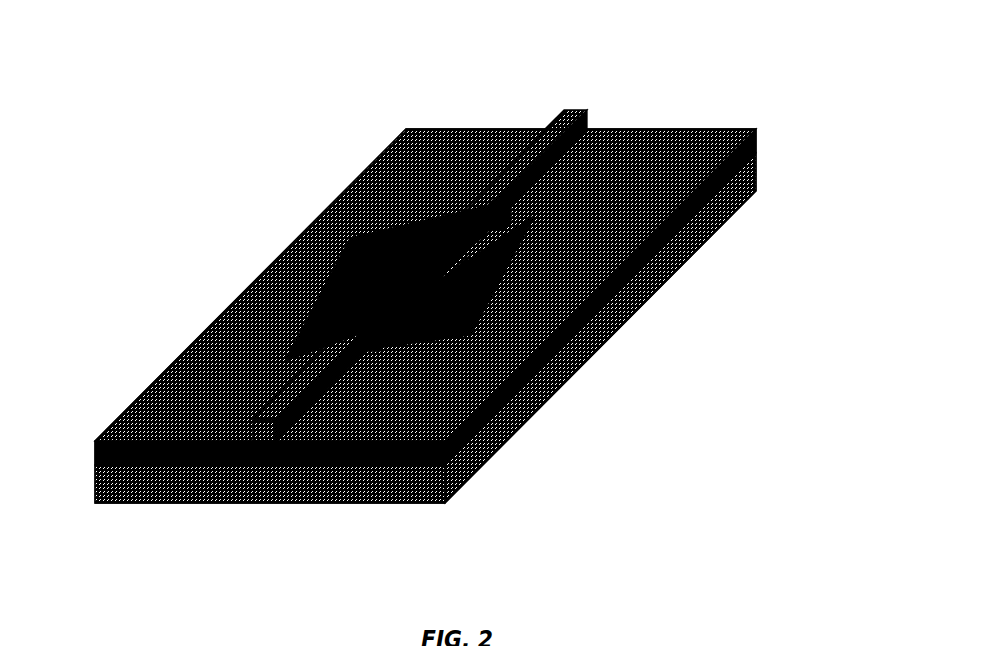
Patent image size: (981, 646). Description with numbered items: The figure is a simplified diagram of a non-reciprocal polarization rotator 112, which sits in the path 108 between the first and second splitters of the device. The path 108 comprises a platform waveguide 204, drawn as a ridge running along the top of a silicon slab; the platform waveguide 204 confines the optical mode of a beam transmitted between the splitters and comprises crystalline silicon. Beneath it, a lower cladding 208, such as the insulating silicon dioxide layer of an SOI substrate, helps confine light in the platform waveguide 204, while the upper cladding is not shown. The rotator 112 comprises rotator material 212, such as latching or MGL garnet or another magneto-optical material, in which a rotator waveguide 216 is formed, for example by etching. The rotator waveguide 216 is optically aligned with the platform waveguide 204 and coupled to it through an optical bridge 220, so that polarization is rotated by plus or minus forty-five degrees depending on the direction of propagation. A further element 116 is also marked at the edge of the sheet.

The non-reciprocal polarization rotator 112 is at (771, 88).
The path 108 is at (580, 116).
The lower cladding 208 is at (114, 480).
The platform waveguide 204 is at (557, 103).
The rotator material 212 is at (333, 304).
The rotator waveguide 216 is at (393, 273).
The optical bridge 220 is at (465, 200).
The optical element 116 is at (757, 645).